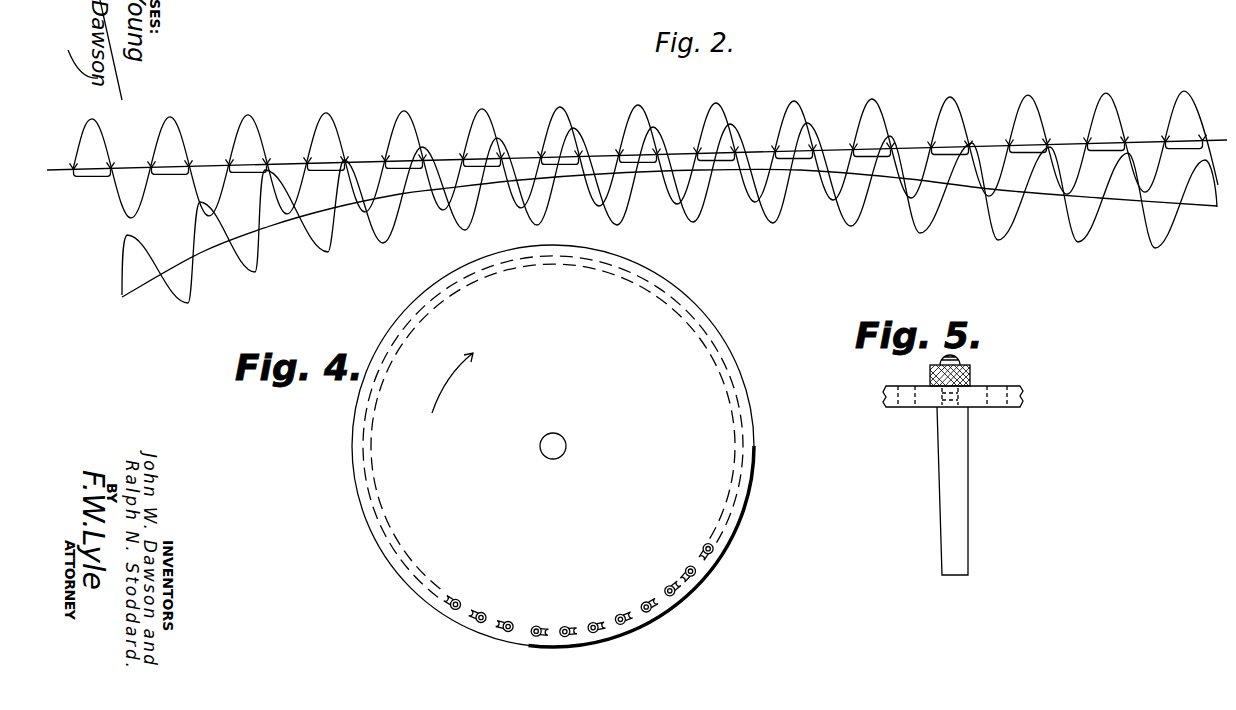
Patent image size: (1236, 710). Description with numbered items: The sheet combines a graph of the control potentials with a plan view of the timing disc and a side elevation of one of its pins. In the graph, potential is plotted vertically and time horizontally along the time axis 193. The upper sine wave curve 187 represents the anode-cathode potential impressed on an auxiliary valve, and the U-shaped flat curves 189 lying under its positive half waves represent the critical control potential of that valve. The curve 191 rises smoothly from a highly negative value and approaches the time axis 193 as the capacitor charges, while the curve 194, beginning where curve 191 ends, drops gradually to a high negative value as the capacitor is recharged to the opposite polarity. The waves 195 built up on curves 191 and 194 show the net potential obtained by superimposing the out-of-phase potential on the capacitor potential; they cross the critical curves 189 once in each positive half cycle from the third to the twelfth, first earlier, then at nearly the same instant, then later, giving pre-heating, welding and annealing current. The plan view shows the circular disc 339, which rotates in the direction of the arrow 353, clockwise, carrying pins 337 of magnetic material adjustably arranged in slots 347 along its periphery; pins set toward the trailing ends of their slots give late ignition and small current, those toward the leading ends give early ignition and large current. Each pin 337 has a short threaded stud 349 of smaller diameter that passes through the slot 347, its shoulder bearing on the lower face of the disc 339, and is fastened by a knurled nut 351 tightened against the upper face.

In FIG. 2, the sine wave curve 187 is at (483, 110).
In FIG. 2, the U-shaped flat curves 189 is at (103, 181).
In FIG. 2, the capacitor potential curve 191 is at (273, 227).
In FIG. 2, the time axis 193 is at (376, 149).
In FIG. 2, the recharging curve 194 is at (1043, 203).
In FIG. 2, the net potential waves 195 is at (203, 290).
In FIG. 4, the circular disc 339 is at (708, 316).
In FIG. 5, the circular disc 339 is at (1023, 391).
In FIG. 4, the pin 337 is at (715, 574).
In FIG. 5, the pin 337 is at (968, 428).
In FIG. 4, the slot 347 is at (590, 633).
In FIG. 4, the threaded stud 349 is at (479, 623).
In FIG. 5, the threaded stud 349 is at (960, 360).
In FIG. 4, the knurled nut 351 is at (528, 637).
In FIG. 5, the knurled nut 351 is at (970, 372).
In FIG. 4, the arrow 353 is at (447, 377).